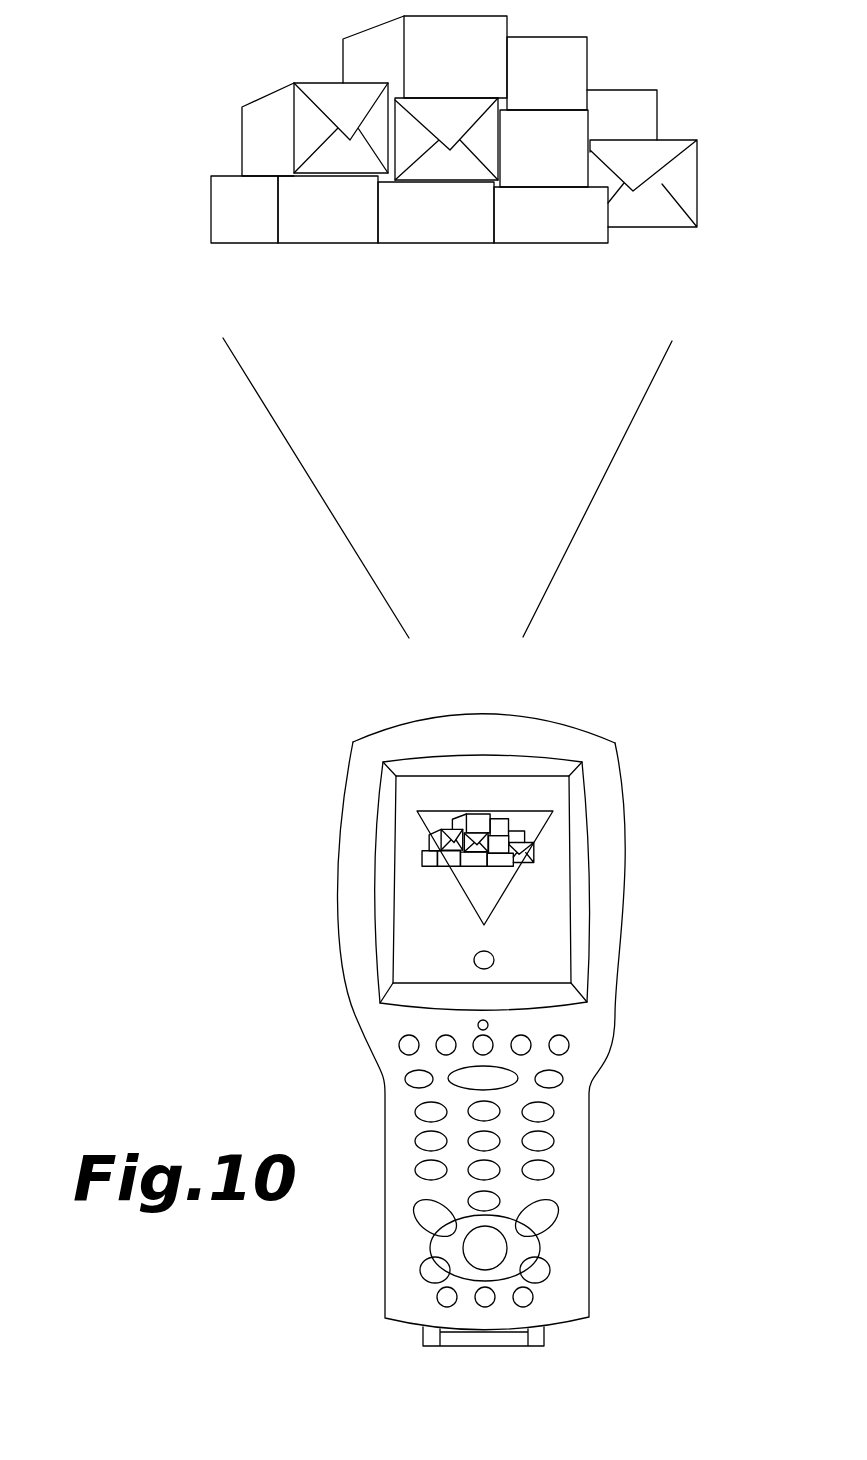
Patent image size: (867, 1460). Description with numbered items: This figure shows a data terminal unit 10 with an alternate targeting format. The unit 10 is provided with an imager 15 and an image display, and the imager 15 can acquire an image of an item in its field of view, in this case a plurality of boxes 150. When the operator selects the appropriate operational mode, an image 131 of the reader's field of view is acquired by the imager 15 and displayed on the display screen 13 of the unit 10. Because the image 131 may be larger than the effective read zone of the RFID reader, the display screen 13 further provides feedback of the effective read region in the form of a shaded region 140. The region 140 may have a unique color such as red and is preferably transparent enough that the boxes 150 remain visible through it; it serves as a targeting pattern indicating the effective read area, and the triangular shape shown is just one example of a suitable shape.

The unit 10 is at (479, 1002).
The display screen 13 is at (423, 957).
The imager 15 is at (487, 713).
The image 131 is at (423, 858).
The shaded region 140 is at (533, 833).
The plurality of boxes 150 is at (183, 161).